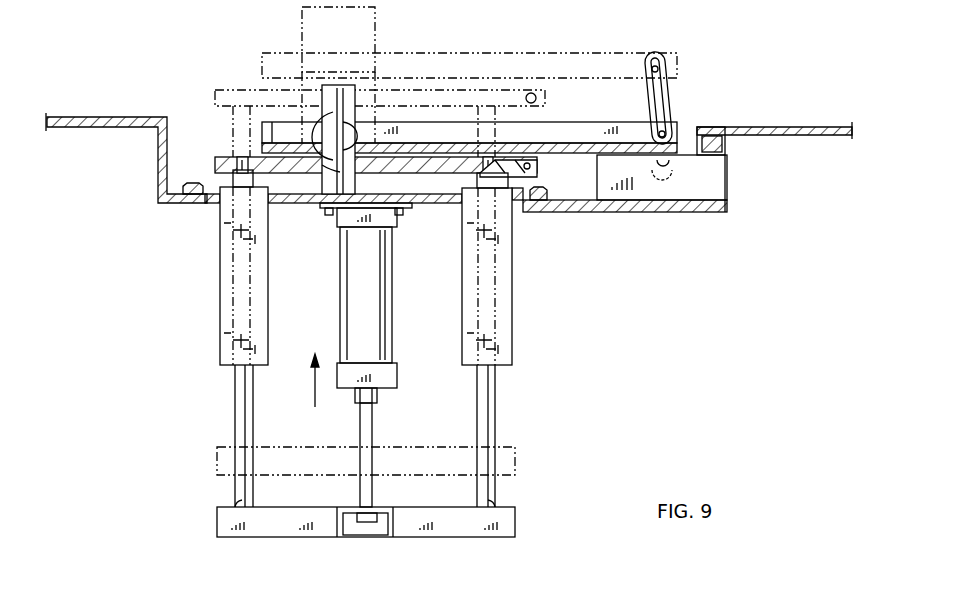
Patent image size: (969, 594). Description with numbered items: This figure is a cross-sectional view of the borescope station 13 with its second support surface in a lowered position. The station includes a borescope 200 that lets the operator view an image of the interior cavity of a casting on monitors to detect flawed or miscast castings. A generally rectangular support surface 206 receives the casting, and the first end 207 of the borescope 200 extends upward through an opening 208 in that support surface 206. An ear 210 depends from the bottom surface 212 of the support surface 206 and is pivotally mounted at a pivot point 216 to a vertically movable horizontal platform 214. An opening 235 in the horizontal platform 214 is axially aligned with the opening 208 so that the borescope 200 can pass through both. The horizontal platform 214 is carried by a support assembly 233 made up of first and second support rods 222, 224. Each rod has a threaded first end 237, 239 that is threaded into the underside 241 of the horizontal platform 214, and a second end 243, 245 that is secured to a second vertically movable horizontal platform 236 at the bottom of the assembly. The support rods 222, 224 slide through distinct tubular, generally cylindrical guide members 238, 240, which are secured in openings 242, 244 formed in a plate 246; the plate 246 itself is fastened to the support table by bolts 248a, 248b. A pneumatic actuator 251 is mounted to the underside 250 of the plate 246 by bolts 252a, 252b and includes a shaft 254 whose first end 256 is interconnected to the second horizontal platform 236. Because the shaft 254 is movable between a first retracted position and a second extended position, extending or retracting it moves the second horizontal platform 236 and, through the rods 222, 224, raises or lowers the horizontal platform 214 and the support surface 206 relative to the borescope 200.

The borescope station 13 is at (603, 231).
The borescope 200 is at (322, 112).
The support surface 206 is at (428, 76).
The first end 207 is at (340, 90).
The opening 208 is at (346, 125).
The ear 210 is at (558, 150).
The bottom surface 212 is at (583, 153).
The horizontal platform 214 is at (518, 213).
The pivot point 216 is at (538, 170).
The first support rod 222 is at (240, 376).
The second support rod 224 is at (497, 395).
The support assembly 233 is at (218, 352).
The opening 235 is at (333, 158).
The second horizontal platform 236 is at (276, 532).
The threaded first end 237 is at (240, 160).
The guide member 238 is at (223, 296).
The threaded first end 239 is at (480, 132).
The guide member 240 is at (470, 305).
The underside 241 is at (405, 206).
The opening 242 is at (220, 188).
The second end 243 is at (240, 503).
The opening 244 is at (477, 200).
The second end 245 is at (496, 505).
The plate 246 is at (286, 203).
The bolt 248a is at (192, 186).
The bolt 248b is at (545, 203).
The underside 250 is at (266, 207).
The pneumatic actuator 251 is at (350, 297).
The bolt 252a is at (328, 216).
The bolt 252b is at (400, 216).
The shaft 254 is at (373, 408).
The first end 256 is at (373, 503).